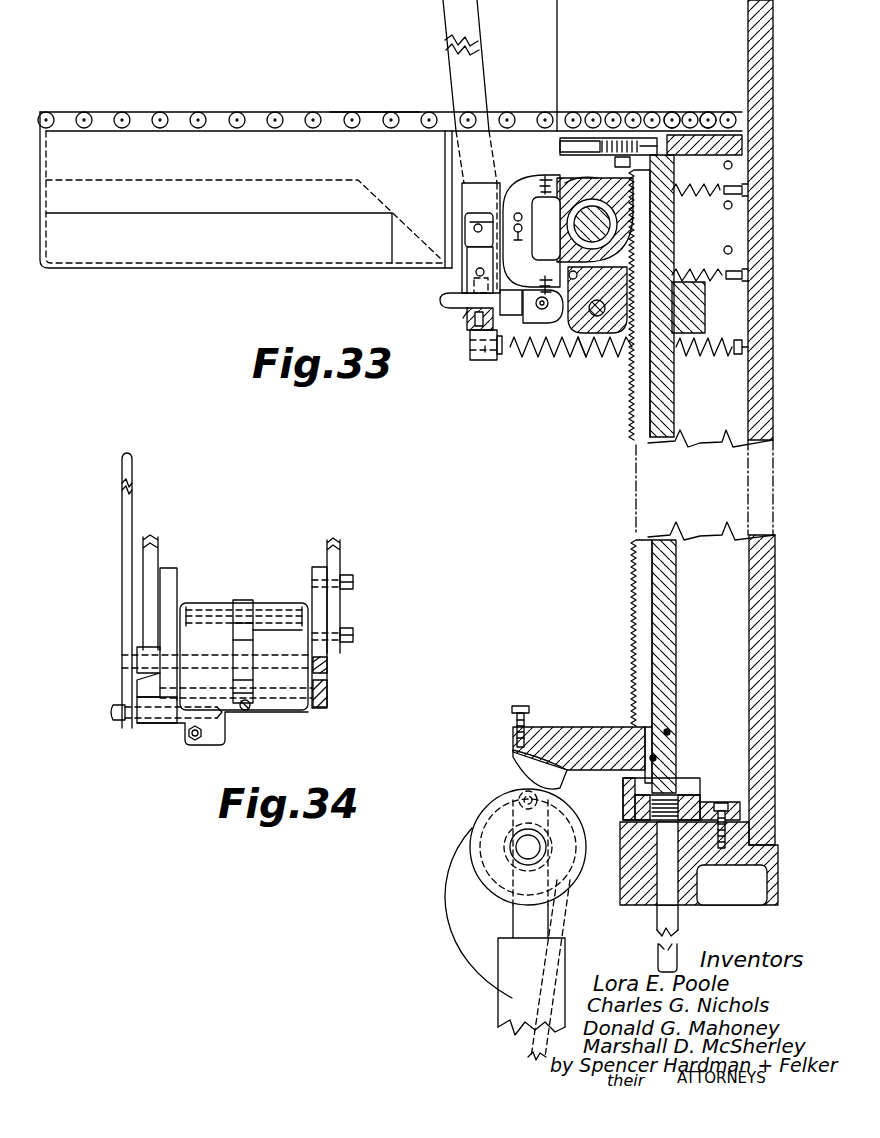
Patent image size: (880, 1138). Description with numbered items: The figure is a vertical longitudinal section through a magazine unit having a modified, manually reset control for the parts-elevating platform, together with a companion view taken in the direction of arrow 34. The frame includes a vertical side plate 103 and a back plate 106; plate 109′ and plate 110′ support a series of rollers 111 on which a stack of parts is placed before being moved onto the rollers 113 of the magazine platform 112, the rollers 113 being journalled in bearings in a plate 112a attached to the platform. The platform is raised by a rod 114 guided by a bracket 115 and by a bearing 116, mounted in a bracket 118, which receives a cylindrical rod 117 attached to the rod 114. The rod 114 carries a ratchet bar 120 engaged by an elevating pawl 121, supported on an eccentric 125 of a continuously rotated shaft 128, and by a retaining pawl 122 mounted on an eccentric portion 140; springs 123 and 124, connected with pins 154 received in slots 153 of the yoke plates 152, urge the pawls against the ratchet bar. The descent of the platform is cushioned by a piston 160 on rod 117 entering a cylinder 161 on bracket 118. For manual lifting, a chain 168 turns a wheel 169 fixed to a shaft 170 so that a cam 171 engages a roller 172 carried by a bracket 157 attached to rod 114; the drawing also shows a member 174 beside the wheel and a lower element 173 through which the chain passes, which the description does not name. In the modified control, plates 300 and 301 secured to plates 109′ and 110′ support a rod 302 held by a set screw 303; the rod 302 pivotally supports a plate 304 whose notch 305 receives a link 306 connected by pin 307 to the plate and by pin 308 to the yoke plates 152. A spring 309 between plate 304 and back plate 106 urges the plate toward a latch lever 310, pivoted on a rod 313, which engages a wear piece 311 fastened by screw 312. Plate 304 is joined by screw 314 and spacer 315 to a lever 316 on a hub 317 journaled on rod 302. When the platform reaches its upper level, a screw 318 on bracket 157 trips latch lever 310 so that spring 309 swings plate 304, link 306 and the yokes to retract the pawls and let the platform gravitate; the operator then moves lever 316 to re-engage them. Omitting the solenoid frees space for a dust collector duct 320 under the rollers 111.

In FIG. 33, the lever 316 is at (447, 62).
In FIG. 34, the lever 316 is at (122, 553).
In FIG. 33, the vertical side plate 103 is at (557, 50).
In FIG. 33, the rollers 111 is at (199, 117).
In FIG. 33, the plate 109′ is at (370, 112).
In FIG. 34, the plate 109′ is at (150, 547).
In FIG. 33, the plate 112a is at (666, 111).
In FIG. 33, the rollers 113 is at (708, 112).
In FIG. 33, the magazine platform 112 is at (733, 145).
In FIG. 33, the plate 300 is at (502, 180).
In FIG. 34, the plate 300 is at (170, 574).
In FIG. 33, the pin 154 is at (560, 183).
In FIG. 33, the yoke plates 152 is at (527, 176).
In FIG. 33, the elevating pawl 121 is at (603, 176).
In FIG. 33, the spring 123 is at (700, 186).
In FIG. 33, the link 306 is at (478, 213).
In FIG. 34, the link 306 is at (246, 601).
In FIG. 33, the pin 307 is at (470, 222).
In FIG. 34, the pin 307 is at (202, 612).
In FIG. 33, the rod 302 is at (478, 270).
In FIG. 34, the rod 302 is at (123, 659).
In FIG. 33, the pin 308 is at (532, 223).
In FIG. 33, the eccentric 125 is at (585, 226).
In FIG. 33, the shaft 128 is at (610, 226).
In FIG. 33, the slots 153 is at (548, 271).
In FIG. 33, the spring 124 is at (702, 270).
In FIG. 33, the set screw 303 is at (474, 284).
In FIG. 34, the set screw 303 is at (330, 676).
In FIG. 33, the arrow 34 is at (430, 300).
In FIG. 33, the latch lever 310 is at (467, 313).
In FIG. 33, the rod 313 is at (540, 310).
In FIG. 34, the rod 313 is at (330, 702).
In FIG. 33, the plate 304 is at (470, 344).
In FIG. 34, the plate 304 is at (290, 712).
In FIG. 33, the screw 312 is at (463, 318).
In FIG. 34, the screw 312 is at (247, 711).
In FIG. 33, the wear piece 311 is at (486, 348).
In FIG. 33, the eccentric portion 140 is at (582, 357).
In FIG. 33, the retaining pawl 122 is at (614, 356).
In FIG. 33, the spring 309 is at (545, 358).
In FIG. 33, the bracket 115 is at (697, 327).
In FIG. 33, the back plate 106 is at (773, 300).
In FIG. 33, the rod 114 is at (676, 402).
In FIG. 33, the ratchet bar 120 is at (636, 420).
In FIG. 33, the dust collector duct 320 is at (162, 258).
In FIG. 33, the screw 318 is at (521, 706).
In FIG. 33, the bracket 157 is at (588, 732).
In FIG. 33, the piston 160 is at (683, 797).
In FIG. 33, the cylinder 161 is at (720, 803).
In FIG. 33, the roller 172 is at (510, 783).
In FIG. 33, the wheel 169 is at (485, 819).
In FIG. 33, the shaft 170 is at (516, 846).
In FIG. 33, the cam 171 is at (455, 897).
In FIG. 33, the link 174 is at (518, 925).
In FIG. 33, the chain 168 is at (566, 926).
In FIG. 33, the bearing 116 is at (690, 868).
In FIG. 33, the bracket 118 is at (774, 893).
In FIG. 33, the rod 117 is at (680, 924).
In FIG. 33, the bracket 173 is at (505, 1012).
In FIG. 34, the plate 110′ is at (330, 549).
In FIG. 34, the plate 301 is at (312, 572).
In FIG. 34, the notch 305 is at (253, 645).
In FIG. 34, the hub 317 is at (137, 683).
In FIG. 34, the screw 314 is at (113, 711).
In FIG. 34, the spacer 315 is at (150, 725).